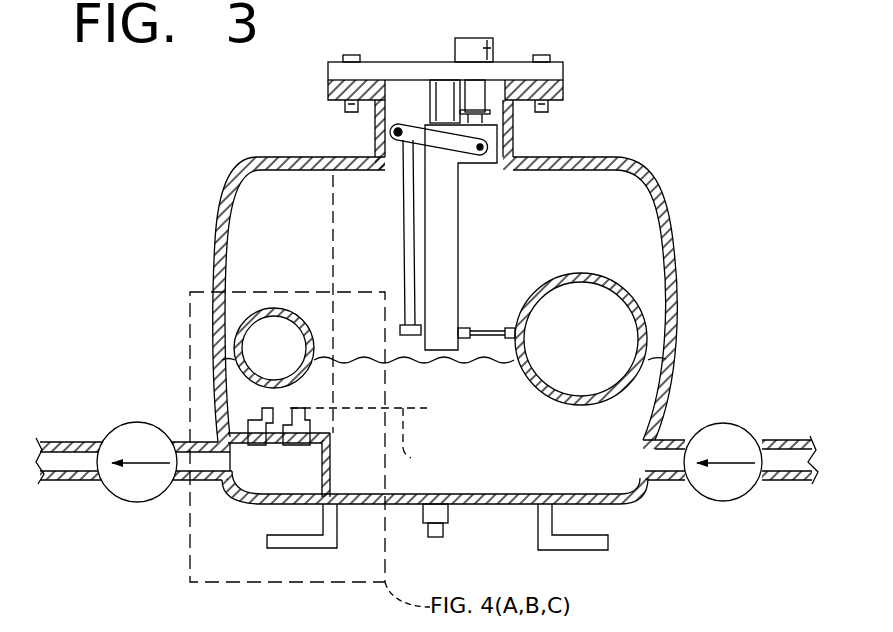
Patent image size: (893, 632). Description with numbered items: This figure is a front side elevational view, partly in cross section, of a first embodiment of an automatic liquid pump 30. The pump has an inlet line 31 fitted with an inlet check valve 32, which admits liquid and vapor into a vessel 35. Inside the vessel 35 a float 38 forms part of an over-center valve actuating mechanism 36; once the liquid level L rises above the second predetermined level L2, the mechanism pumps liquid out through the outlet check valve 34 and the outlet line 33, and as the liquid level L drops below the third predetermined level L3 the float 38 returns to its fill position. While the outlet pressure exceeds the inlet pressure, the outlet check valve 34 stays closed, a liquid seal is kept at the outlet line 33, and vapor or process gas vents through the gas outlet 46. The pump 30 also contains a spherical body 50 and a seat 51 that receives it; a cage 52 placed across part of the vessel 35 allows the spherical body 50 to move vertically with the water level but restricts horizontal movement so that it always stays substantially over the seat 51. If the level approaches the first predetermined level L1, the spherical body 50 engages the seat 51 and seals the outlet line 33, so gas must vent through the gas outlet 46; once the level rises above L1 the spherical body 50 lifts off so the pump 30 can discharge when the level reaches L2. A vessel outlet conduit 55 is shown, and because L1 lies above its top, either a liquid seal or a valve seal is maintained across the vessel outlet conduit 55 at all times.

The liquid pump 30 is at (426, 279).
The inlet line 31 is at (790, 482).
The inlet check valve 32 is at (723, 502).
The outlet line 33 is at (68, 440).
The outlet check valve 34 is at (139, 422).
The vessel 35 is at (575, 157).
The over-center valve actuating mechanism 36 is at (486, 217).
The float 38 is at (565, 354).
The gas outlet 46 is at (495, 55).
The spherical body 50 is at (258, 362).
The seat 51 is at (277, 423).
The cage 52 is at (333, 228).
The vessel outlet conduit 55 is at (202, 463).
The liquid level L is at (442, 360).
The first predetermined liquid level L1 is at (364, 441).
The second predetermined liquid level L2 is at (680, 328).
The third predetermined liquid level L3 is at (673, 395).